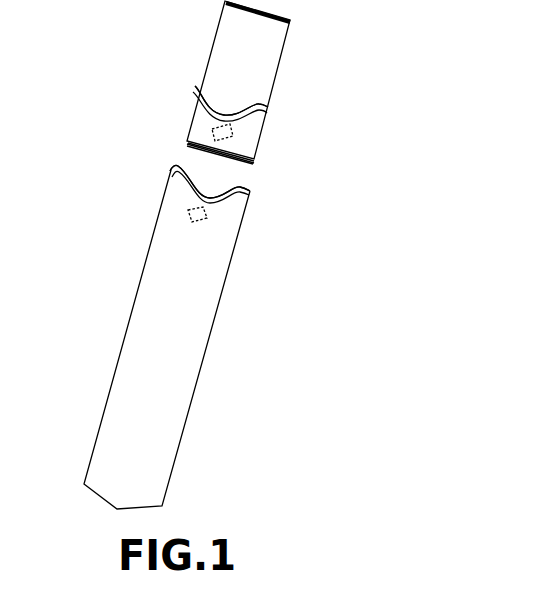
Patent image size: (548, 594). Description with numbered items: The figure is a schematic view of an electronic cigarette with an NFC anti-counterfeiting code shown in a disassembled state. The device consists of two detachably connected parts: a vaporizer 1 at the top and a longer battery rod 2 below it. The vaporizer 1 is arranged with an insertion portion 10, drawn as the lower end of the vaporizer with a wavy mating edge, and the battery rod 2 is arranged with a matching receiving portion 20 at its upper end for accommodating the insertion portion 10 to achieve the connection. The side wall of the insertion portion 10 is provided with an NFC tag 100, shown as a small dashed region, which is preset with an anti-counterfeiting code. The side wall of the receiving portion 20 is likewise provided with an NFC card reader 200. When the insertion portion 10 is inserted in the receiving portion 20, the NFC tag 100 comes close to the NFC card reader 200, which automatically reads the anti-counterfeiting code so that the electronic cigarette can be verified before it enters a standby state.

The vaporizer 1 is at (268, 72).
The insertion portion 10 is at (186, 77).
The NFC tag 100 is at (241, 131).
The battery rod 2 is at (178, 357).
The receiving portion 20 is at (162, 157).
The NFC card reader 200 is at (218, 213).